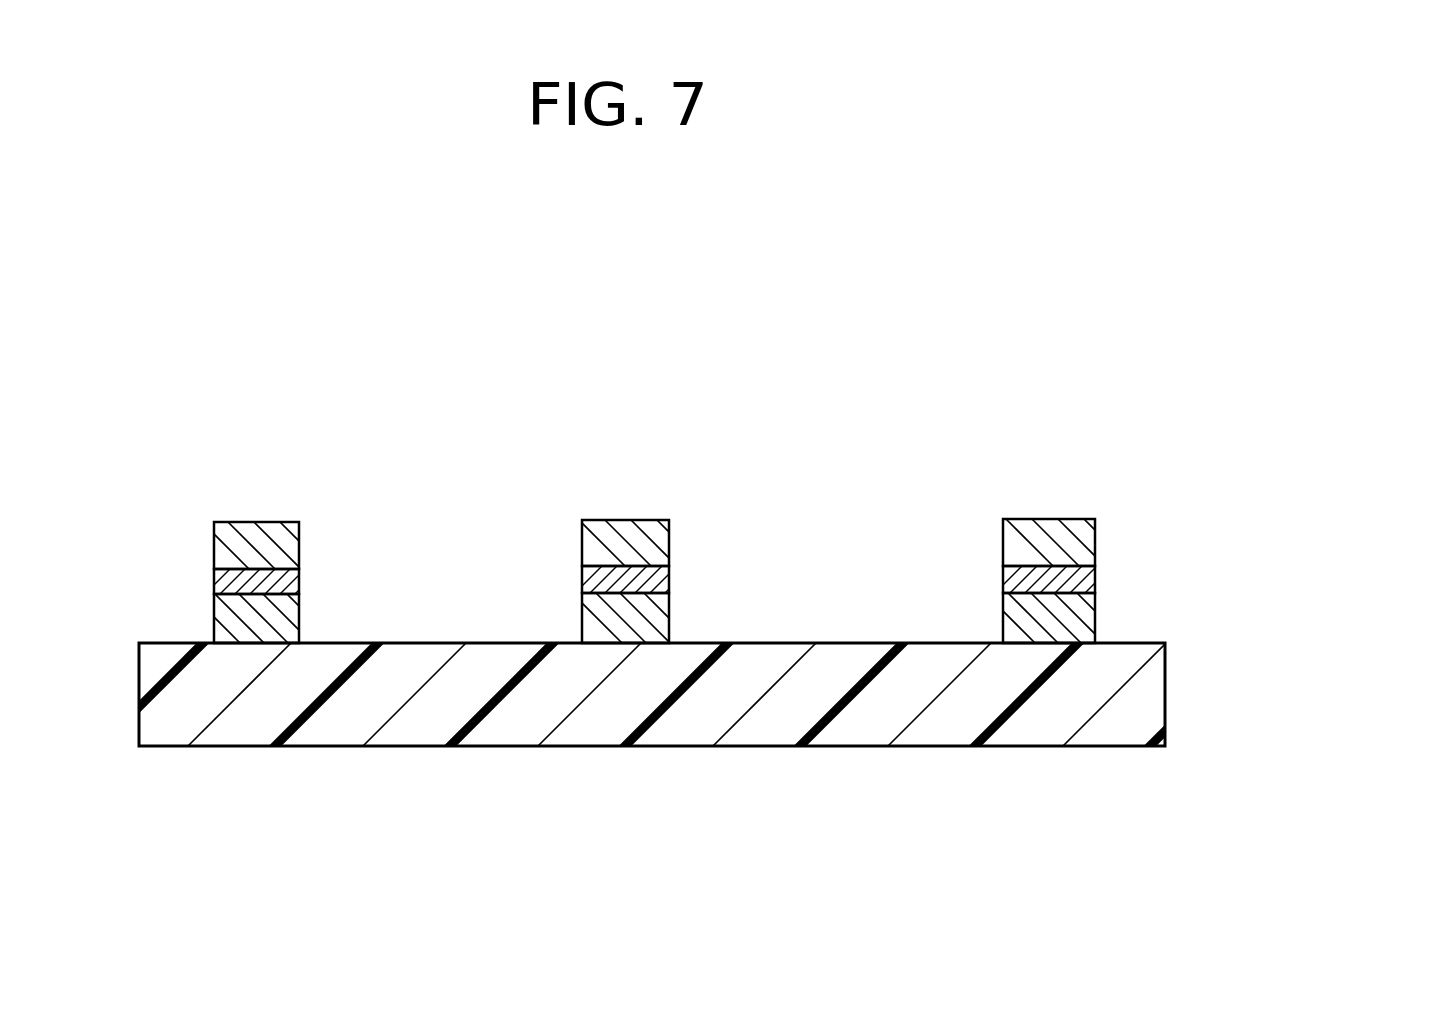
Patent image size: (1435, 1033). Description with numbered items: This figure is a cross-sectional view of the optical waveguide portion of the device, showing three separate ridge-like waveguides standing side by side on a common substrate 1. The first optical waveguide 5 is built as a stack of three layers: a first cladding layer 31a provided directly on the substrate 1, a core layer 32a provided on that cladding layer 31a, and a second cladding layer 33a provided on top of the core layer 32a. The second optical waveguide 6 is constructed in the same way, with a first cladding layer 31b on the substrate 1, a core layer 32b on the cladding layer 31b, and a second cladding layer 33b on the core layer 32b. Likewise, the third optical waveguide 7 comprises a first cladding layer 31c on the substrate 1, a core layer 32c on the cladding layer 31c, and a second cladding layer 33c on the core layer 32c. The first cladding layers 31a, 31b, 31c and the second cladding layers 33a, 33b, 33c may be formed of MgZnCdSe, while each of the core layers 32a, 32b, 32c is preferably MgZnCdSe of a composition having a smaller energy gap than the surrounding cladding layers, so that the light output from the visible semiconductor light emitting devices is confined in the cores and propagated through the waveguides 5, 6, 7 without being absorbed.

The substrate 1 is at (187, 736).
The optical waveguide 5 is at (364, 487).
The optical waveguide 6 is at (753, 486).
The optical waveguide 7 is at (1189, 486).
The first cladding layer 31a is at (358, 615).
The first cladding layer 31b is at (735, 618).
The first cladding layer 31c is at (1161, 618).
The core layer 32a is at (293, 579).
The core layer 32b is at (664, 578).
The core layer 32c is at (1090, 578).
The second cladding layer 33a is at (281, 530).
The second cladding layer 33b is at (648, 528).
The second cladding layer 33c is at (1058, 528).